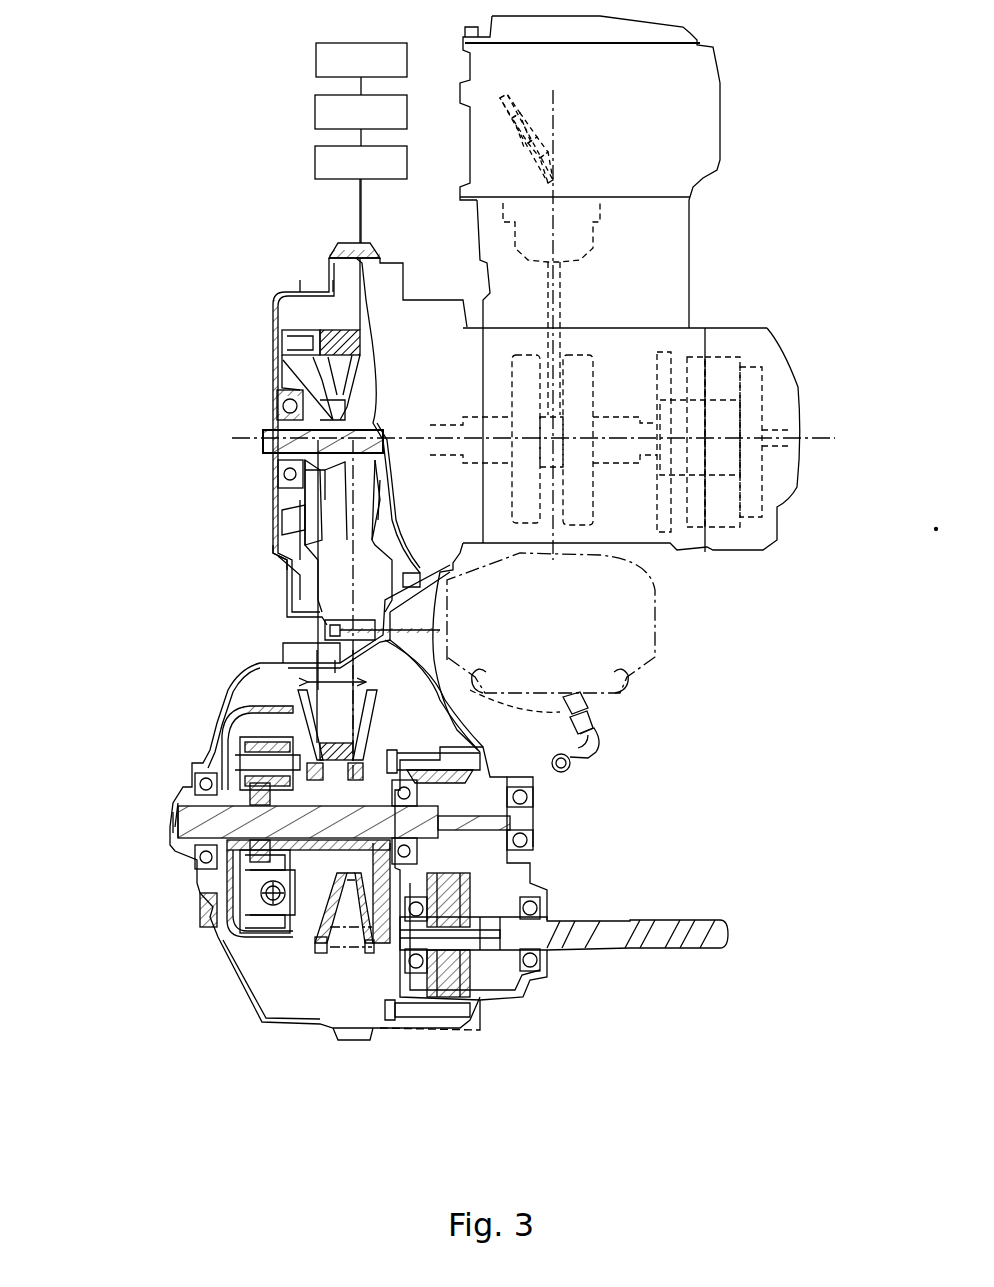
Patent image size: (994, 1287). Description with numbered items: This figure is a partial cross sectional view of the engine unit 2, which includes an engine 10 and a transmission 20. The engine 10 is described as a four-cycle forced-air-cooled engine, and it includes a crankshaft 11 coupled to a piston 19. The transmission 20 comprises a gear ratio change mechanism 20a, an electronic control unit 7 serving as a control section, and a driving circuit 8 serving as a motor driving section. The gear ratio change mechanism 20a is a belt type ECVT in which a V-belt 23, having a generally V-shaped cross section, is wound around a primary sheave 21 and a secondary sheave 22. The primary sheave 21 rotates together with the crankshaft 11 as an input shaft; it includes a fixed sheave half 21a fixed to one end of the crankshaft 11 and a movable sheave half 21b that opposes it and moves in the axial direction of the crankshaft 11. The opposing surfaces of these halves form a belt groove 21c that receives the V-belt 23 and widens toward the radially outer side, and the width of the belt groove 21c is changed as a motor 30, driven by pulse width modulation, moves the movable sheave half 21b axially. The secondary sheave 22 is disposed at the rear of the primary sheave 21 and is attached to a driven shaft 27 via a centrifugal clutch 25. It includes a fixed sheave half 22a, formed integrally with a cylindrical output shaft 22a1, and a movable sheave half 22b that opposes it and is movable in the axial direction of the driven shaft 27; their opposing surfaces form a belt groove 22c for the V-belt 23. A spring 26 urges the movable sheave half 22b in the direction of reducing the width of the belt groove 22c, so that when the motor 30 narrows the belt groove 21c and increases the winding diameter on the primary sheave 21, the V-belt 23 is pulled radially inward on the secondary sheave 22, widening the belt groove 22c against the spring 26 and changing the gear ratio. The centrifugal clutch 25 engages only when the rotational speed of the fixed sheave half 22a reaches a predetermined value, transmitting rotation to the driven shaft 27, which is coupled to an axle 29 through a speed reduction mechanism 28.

The engine unit 2 is at (277, 221).
The electronic control unit (ECU) 7 is at (316, 57).
The driving circuit 8 is at (315, 110).
The motor 30 is at (315, 157).
The engine 10 is at (676, 281).
The crankshaft 11 is at (596, 515).
The piston 19 is at (602, 203).
The transmission 20 is at (266, 538).
The gear ratio change mechanism 20a is at (275, 553).
The primary sheave 21 is at (306, 325).
The fixed sheave half 21a is at (326, 546).
The movable sheave half 21b is at (378, 540).
The belt groove 21c is at (280, 502).
The secondary sheave 22 is at (312, 966).
The fixed sheave half 22a is at (362, 955).
The cylindrical output shaft 22a1 is at (240, 763).
The movable sheave half 22b is at (318, 952).
The belt groove 22c is at (328, 960).
The V-belt 23 is at (318, 632).
The centrifugal clutch 25 is at (243, 942).
The spring 26 is at (286, 891).
The driven shaft 27 is at (190, 822).
The speed reduction mechanism 28 is at (538, 870).
The axle 29 is at (663, 918).